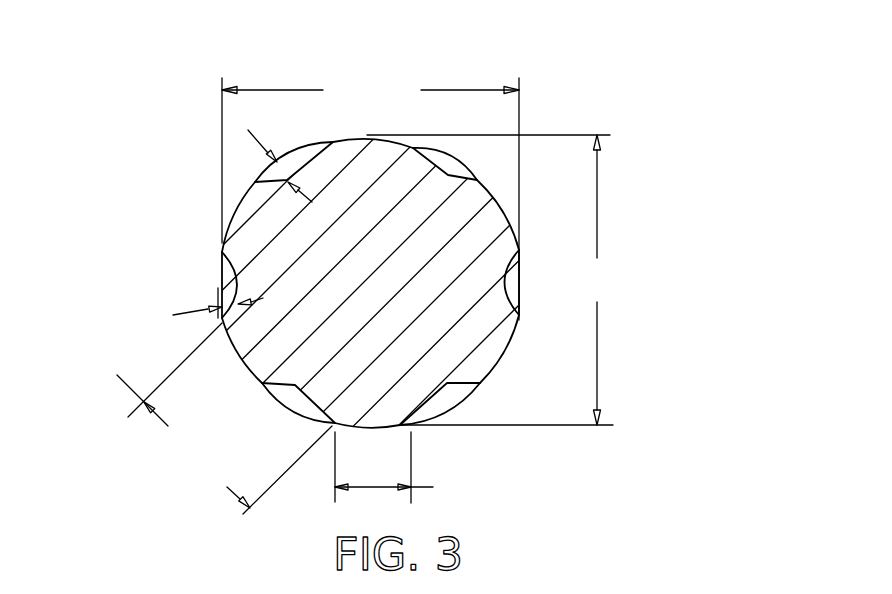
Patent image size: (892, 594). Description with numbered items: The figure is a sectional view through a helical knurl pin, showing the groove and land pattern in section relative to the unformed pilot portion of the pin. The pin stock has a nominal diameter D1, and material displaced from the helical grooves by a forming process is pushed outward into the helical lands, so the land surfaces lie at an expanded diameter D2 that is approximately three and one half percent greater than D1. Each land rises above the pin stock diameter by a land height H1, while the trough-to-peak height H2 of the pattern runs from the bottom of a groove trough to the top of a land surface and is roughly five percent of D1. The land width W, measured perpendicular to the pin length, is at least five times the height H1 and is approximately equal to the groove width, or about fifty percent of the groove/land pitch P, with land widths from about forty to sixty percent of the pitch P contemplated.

The pin stock diameter D1 is at (452, 90).
The expanded diameter D2 is at (597, 363).
The land height H1 is at (181, 308).
The trough-to-peak height H2 is at (250, 128).
The groove/land pitch P is at (224, 418).
The land width W is at (370, 487).